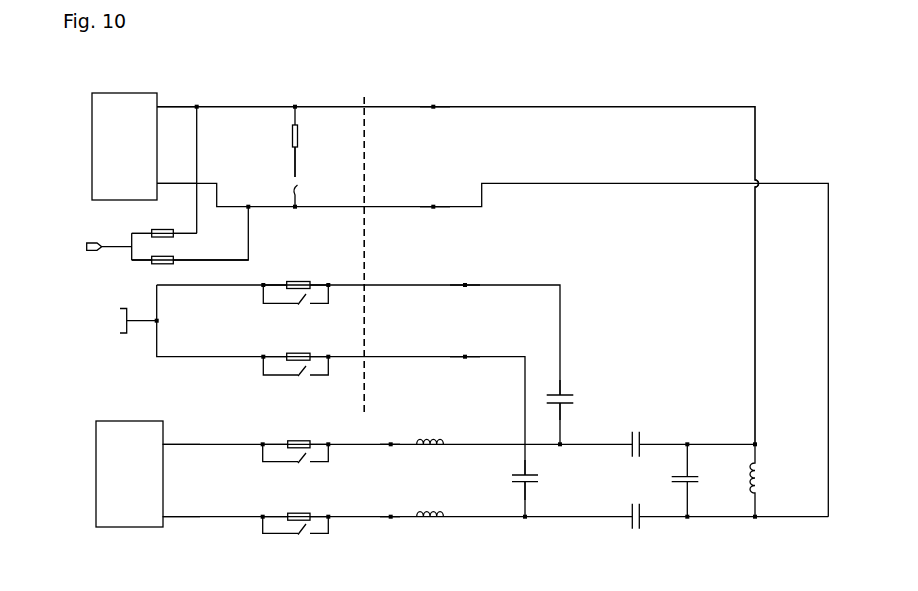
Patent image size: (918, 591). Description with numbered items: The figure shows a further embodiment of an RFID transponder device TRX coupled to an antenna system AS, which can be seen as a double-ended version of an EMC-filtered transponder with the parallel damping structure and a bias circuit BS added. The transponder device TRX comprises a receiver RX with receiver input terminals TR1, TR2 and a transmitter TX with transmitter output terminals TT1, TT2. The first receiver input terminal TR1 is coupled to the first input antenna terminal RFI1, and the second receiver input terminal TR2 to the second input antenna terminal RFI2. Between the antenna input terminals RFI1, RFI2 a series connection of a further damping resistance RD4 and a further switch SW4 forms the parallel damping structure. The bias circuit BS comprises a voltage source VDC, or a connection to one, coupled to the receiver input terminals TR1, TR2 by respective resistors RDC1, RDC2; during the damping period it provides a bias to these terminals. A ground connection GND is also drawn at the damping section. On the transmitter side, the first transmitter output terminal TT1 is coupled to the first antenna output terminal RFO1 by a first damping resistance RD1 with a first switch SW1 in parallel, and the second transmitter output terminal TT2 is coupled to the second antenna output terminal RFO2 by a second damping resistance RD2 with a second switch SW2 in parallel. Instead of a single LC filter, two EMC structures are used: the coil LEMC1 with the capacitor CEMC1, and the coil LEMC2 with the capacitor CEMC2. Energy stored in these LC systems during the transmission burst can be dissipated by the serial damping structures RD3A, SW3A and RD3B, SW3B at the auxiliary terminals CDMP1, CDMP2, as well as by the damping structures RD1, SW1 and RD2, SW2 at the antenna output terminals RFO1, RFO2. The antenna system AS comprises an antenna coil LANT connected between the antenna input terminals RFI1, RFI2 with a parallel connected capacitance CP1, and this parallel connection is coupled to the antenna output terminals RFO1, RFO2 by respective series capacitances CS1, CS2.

The receiver RX is at (124, 146).
The transmitter TX is at (129, 474).
The RFID transponder device TRX is at (279, 95).
The bias circuit BS is at (207, 226).
The antenna system AS is at (769, 166).
The first receiver input terminal TR1 is at (158, 105).
The second receiver input terminal TR2 is at (160, 182).
The first input antenna terminal RFI1 is at (433, 105).
The second input antenna terminal RFI2 is at (433, 205).
The further damping resistance RD4 is at (292, 130).
The further switch SW4 is at (298, 188).
The resistor RDC1 is at (154, 229).
The resistor RDC2 is at (156, 264).
The voltage source VDC is at (87, 246).
The damping resistance RD3A is at (296, 281).
The switch SW3A is at (302, 306).
The damping resistance RD3B is at (296, 353).
The switch SW3B is at (300, 378).
The auxiliary terminal CDMP1 is at (465, 284).
The auxiliary terminal CDMP2 is at (465, 356).
The ground GND is at (113, 322).
The EMC capacitor CEMC1 is at (589, 399).
The EMC capacitor CEMC2 is at (558, 480).
The first damping resistance RD1 is at (297, 440).
The first switch SW1 is at (302, 465).
The second damping resistance RD2 is at (296, 513).
The second switch SW2 is at (300, 537).
The first transmitter output terminal TT1 is at (176, 428).
The second transmitter output terminal TT2 is at (166, 518).
The first antenna output terminal RFO1 is at (391, 442).
The second antenna output terminal RFO2 is at (391, 515).
The EMC coil LEMC1 is at (437, 455).
The EMC coil LEMC2 is at (437, 528).
The capacitance CS1 is at (640, 457).
The capacitance CS2 is at (640, 528).
The parallel capacitor 1 CP1 is at (704, 480).
The antenna coil LANT is at (781, 480).